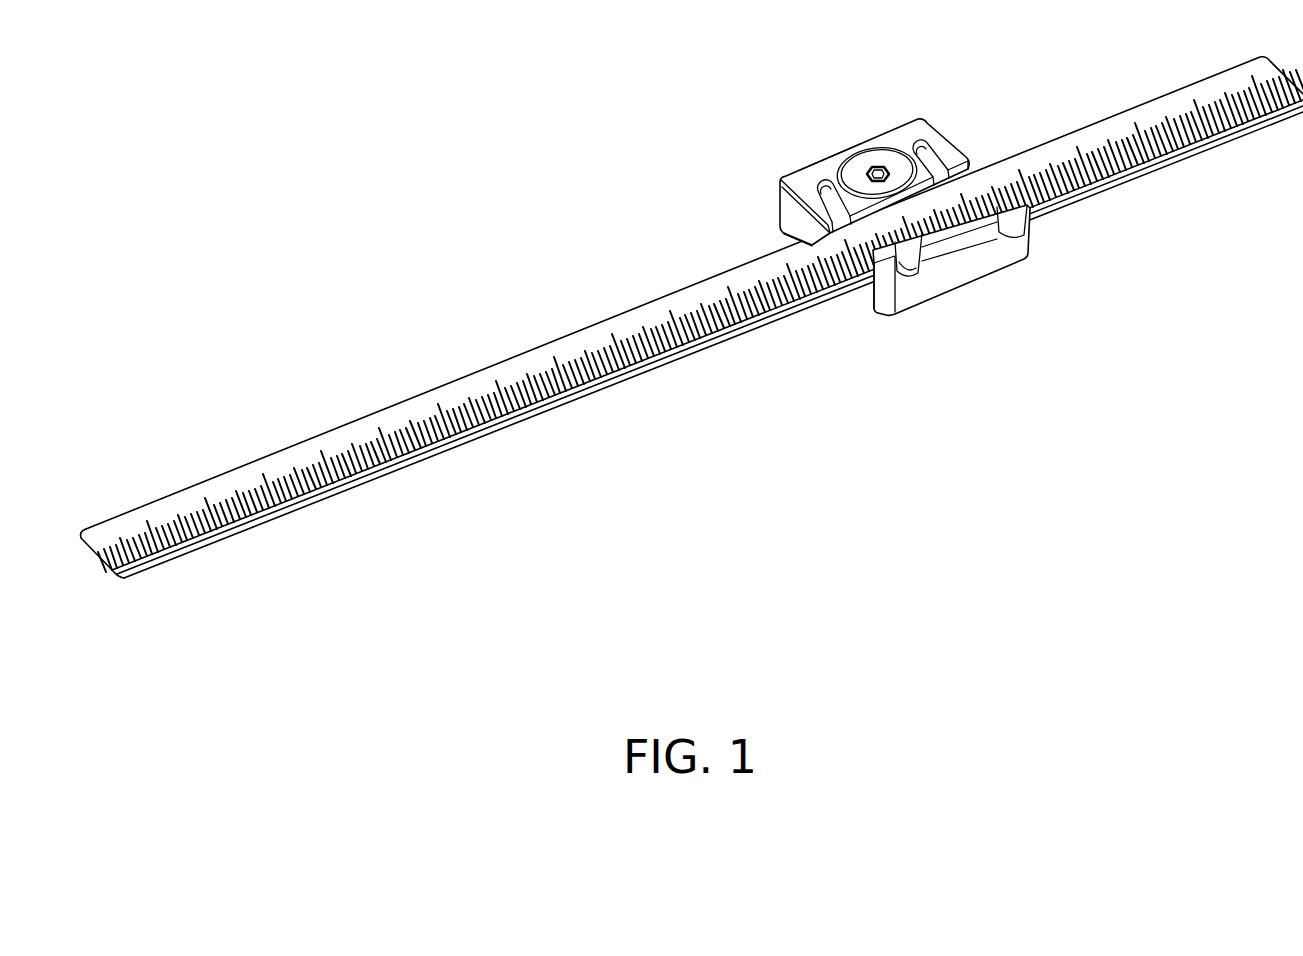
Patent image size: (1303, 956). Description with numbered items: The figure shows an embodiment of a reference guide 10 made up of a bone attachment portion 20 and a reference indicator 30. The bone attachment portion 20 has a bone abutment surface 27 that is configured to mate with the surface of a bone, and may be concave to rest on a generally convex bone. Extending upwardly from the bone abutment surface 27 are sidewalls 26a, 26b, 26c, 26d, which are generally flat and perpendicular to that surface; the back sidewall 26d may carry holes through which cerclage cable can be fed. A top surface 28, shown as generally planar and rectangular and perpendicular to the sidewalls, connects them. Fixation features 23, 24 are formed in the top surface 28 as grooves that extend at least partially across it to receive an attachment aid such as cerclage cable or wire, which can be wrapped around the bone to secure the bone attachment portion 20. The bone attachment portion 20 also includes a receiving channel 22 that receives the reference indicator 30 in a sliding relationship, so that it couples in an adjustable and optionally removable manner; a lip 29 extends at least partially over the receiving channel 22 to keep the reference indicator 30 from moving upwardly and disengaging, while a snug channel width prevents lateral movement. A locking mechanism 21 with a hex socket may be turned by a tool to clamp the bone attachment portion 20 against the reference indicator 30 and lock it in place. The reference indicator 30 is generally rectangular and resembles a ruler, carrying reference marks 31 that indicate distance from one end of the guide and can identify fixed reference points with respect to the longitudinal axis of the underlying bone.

The reference guide 10 is at (424, 242).
The bone attachment portion 20 is at (884, 122).
The locking mechanism 21 is at (853, 162).
The receiving channel 22 is at (953, 163).
The fixation feature 23 is at (800, 183).
The fixation feature 24 is at (925, 150).
The sidewall 26a is at (996, 250).
The sidewall 26b is at (797, 208).
The sidewall 26c is at (970, 165).
The back sidewall 26d is at (835, 150).
The bone abutment surface 27 is at (783, 243).
The top surface 28 is at (815, 160).
The lip 29 is at (945, 192).
The reference indicator 30 is at (100, 532).
The reference marks 31 is at (116, 577).